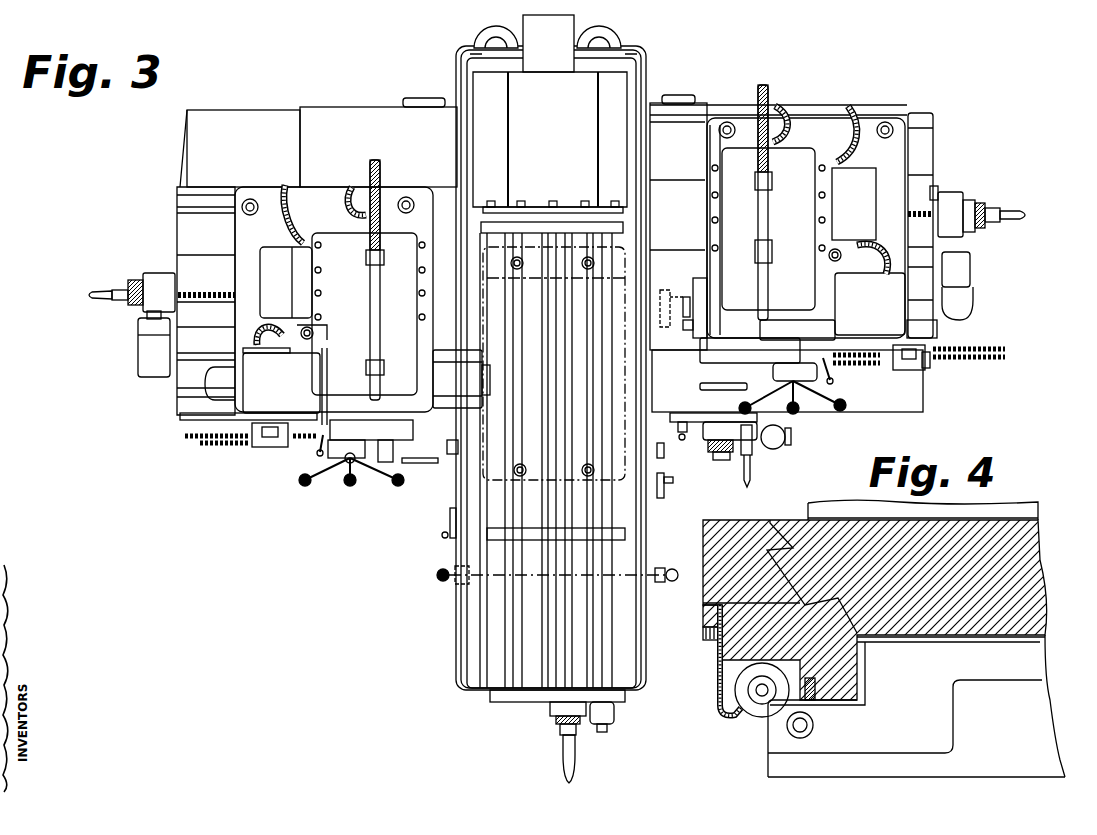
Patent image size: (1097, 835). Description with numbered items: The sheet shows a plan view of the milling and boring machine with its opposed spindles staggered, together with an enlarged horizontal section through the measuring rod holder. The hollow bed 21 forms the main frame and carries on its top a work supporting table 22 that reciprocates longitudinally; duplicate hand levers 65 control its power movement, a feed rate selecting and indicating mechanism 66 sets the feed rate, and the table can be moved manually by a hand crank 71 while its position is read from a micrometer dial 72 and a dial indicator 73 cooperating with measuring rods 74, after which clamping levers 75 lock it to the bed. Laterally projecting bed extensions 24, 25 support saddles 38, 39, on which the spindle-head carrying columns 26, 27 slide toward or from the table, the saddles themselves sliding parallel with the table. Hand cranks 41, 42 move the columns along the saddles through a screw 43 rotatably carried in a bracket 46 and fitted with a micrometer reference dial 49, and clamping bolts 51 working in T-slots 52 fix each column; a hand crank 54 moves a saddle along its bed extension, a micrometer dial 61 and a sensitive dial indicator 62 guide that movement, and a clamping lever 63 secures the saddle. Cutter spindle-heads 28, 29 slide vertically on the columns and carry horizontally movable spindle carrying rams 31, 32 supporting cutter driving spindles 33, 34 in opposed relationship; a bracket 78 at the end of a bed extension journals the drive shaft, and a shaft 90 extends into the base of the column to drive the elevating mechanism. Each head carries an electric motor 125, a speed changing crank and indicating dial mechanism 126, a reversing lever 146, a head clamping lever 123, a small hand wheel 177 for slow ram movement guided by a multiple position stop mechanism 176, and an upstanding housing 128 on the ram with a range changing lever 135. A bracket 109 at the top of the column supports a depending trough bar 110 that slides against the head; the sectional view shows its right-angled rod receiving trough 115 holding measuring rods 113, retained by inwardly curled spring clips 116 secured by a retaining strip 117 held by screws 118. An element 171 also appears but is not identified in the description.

In FIG. 3, the bed 21 is at (500, 98).
In FIG. 3, the work supporting table 22 is at (558, 208).
In FIG. 3, the bed extension 24 is at (218, 113).
In FIG. 3, the bed extension 25 is at (922, 407).
In FIG. 3, the spindle-head carrying column 26 is at (338, 237).
In FIG. 3, the spindle-head carrying column 27 is at (805, 294).
In FIG. 3, the cutter spindle-head 28 is at (300, 335).
In FIG. 3, the cutter spindle-head 29 is at (803, 333).
In FIG. 4, the cutter spindle-head 29 is at (1020, 656).
In FIG. 3, the spindle carrying ram 31 is at (452, 355).
In FIG. 3, the spindle carrying ram 32 is at (693, 284).
In FIG. 3, the cutter driving spindle 33 is at (489, 364).
In FIG. 3, the cutter driving spindle 34 is at (688, 332).
In FIG. 3, the saddle 38 is at (190, 226).
In FIG. 3, the saddle 39 is at (936, 142).
In FIG. 3, the hand crank 41 is at (97, 290).
In FIG. 3, the hand crank 42 is at (1015, 210).
In FIG. 3, the screw 43 is at (208, 291).
In FIG. 3, the bracket 46 is at (160, 274).
In FIG. 3, the micrometer reference dial 49 is at (140, 326).
In FIG. 3, the clamping bolts 51 is at (251, 199).
In FIG. 3, the T-slots 52 is at (207, 203).
In FIG. 3, the hand crank 54 is at (752, 476).
In FIG. 3, the micrometer dial 61 is at (718, 462).
In FIG. 3, the sensitive dial indicator 62 is at (782, 448).
In FIG. 3, the clamping lever 63 is at (683, 440).
In FIG. 3, the hand levers 65 is at (436, 575).
In FIG. 3, the feed rate selecting and indicating mechanism 66 is at (447, 532).
In FIG. 3, the hand crank 71 is at (562, 766).
In FIG. 3, the micrometer dial 72 is at (552, 722).
In FIG. 3, the dial indicator 73 is at (614, 724).
In FIG. 3, the measuring rods 74 is at (601, 642).
In FIG. 3, the clamping levers 75 is at (452, 456).
In FIG. 3, the bracket 78 is at (940, 186).
In FIG. 3, the shaft 90 is at (215, 352).
In FIG. 3, the bracket 109 is at (426, 376).
In FIG. 4, the trough bar 110 is at (848, 675).
In FIG. 4, the measuring rods 113 is at (745, 710).
In FIG. 4, the rod receiving trough 115 is at (716, 669).
In FIG. 4, the spring clips 116 is at (716, 691).
In FIG. 4, the retaining strip 117 is at (705, 610).
In FIG. 4, the screws 118 is at (705, 632).
In FIG. 3, the head clamping lever 123 is at (321, 447).
In FIG. 3, the electric motor 125 is at (308, 372).
In FIG. 3, the speed changing crank and indicating dial mechanism 126 is at (385, 466).
In FIG. 3, the upstanding housing 128 is at (938, 326).
In FIG. 3, the range changing lever 135 is at (258, 446).
In FIG. 3, the reversing lever 146 is at (340, 422).
In FIG. 3, the handwheel 171 is at (302, 485).
In FIG. 3, the multiple position stop mechanism 176 is at (928, 367).
In FIG. 3, the hand wheel 177 is at (415, 464).